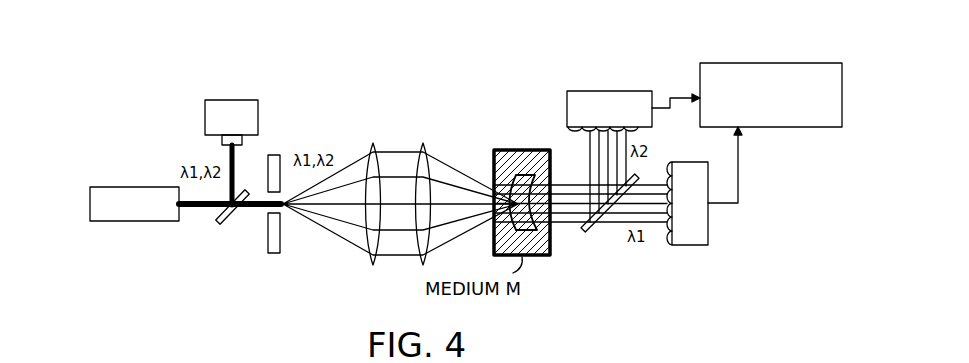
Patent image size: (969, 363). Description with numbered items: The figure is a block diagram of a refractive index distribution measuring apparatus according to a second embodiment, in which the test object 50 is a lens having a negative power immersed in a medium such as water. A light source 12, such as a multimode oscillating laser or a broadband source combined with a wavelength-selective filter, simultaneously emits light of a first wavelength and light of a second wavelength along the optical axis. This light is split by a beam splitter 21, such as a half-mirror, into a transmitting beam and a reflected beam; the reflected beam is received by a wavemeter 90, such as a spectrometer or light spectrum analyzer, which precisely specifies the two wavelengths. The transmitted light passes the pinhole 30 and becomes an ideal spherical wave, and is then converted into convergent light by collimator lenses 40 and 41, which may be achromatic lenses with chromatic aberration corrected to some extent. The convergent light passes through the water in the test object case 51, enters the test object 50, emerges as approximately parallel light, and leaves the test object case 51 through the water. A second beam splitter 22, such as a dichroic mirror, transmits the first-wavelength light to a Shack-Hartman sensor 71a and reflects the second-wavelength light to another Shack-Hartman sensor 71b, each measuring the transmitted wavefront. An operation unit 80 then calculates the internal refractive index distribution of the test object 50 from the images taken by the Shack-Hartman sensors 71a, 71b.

The light source 12 is at (131, 187).
The beam splitter 21 is at (217, 224).
The beam splitter 22 is at (592, 233).
The pinhole 30 is at (284, 153).
The collimator lens 40 is at (372, 144).
The collimator lens 41 is at (423, 144).
The test object 50 is at (524, 175).
The test object case 51 is at (494, 153).
The Shack-Hartman sensor 71a is at (710, 168).
The Shack-Hartman sensor 71b is at (643, 91).
The operation unit 80 is at (717, 63).
The wavemeter 90 is at (214, 100).